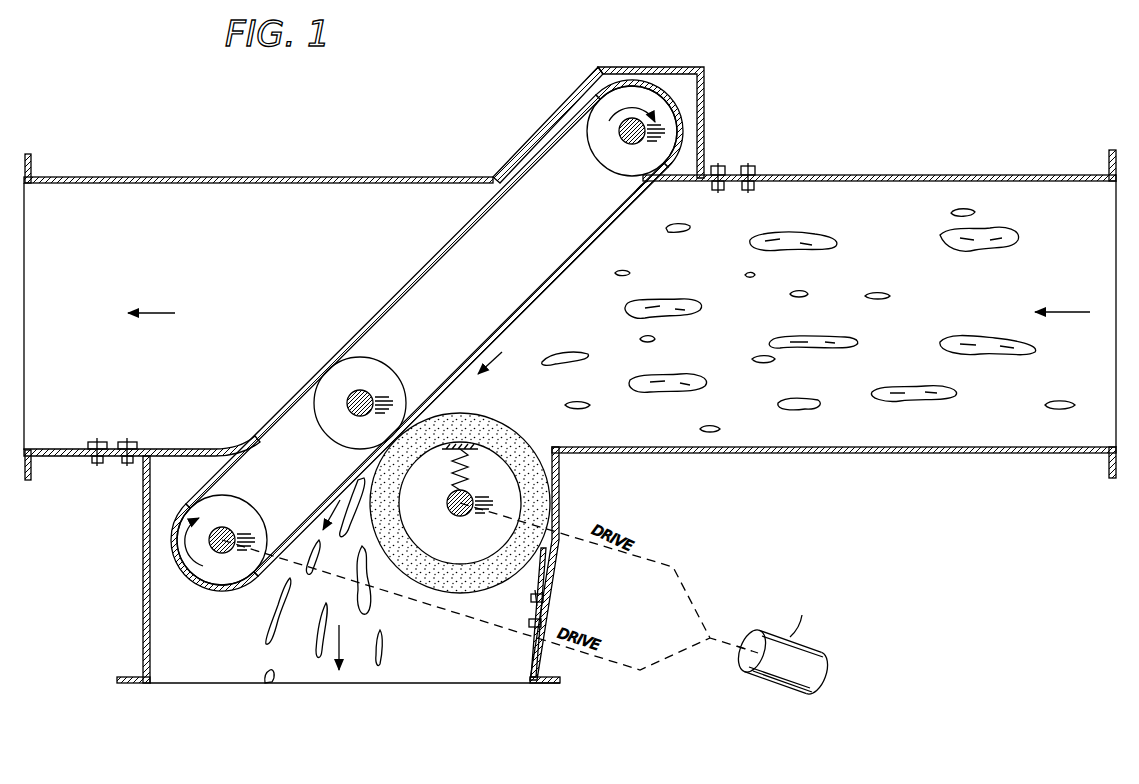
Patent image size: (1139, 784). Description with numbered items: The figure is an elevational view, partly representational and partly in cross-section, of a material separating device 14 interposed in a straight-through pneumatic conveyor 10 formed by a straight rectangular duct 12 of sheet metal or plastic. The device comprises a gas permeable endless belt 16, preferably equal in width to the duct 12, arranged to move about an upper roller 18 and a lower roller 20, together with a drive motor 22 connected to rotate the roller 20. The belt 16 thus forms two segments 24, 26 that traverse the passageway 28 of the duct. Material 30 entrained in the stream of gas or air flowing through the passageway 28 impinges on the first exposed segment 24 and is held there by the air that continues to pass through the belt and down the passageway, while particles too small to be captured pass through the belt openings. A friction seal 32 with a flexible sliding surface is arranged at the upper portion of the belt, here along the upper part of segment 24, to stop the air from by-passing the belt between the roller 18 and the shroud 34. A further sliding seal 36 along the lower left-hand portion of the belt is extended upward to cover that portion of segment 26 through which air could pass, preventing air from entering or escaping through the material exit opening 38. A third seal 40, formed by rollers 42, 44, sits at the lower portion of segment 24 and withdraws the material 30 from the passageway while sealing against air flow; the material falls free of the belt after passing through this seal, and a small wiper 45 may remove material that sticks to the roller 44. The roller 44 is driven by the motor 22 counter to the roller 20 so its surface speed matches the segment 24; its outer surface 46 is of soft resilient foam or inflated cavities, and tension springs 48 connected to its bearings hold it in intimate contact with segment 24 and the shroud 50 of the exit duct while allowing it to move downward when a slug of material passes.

The pneumatic conveyor 10 is at (1042, 150).
The duct 12 is at (884, 177).
The material separating device 14 is at (648, 36).
The endless belt 16 is at (682, 113).
The roller 18 is at (642, 169).
The roller 20 is at (233, 520).
The drive motor 22 is at (765, 674).
The segment 24 is at (552, 292).
The segment 26 is at (432, 268).
The passageway 28 is at (234, 354).
The material 30 is at (912, 388).
The friction seal 32 is at (672, 190).
The shroud 34 is at (684, 68).
The seal 36 is at (200, 446).
The material exit opening 38 is at (440, 654).
The seal 40 is at (362, 456).
The roller 42 is at (390, 372).
The roller 44 is at (469, 545).
The wiper 45 is at (540, 577).
The outer surface 46 is at (537, 444).
The tension springs 48 is at (456, 475).
The shroud 50 is at (557, 524).